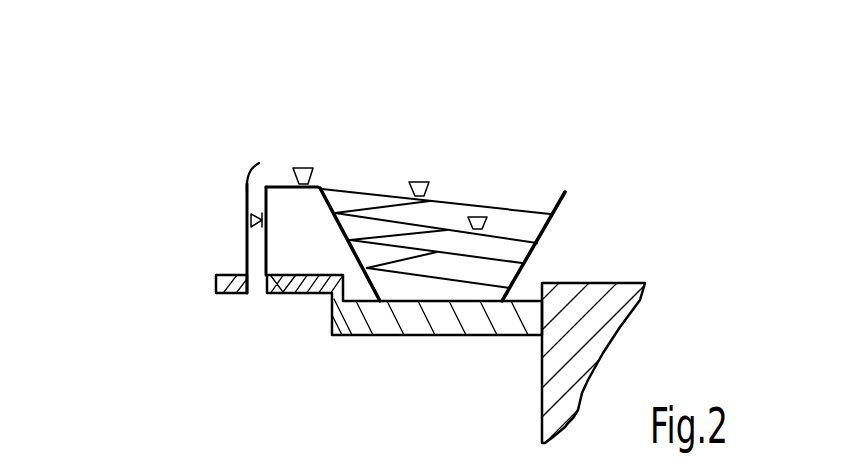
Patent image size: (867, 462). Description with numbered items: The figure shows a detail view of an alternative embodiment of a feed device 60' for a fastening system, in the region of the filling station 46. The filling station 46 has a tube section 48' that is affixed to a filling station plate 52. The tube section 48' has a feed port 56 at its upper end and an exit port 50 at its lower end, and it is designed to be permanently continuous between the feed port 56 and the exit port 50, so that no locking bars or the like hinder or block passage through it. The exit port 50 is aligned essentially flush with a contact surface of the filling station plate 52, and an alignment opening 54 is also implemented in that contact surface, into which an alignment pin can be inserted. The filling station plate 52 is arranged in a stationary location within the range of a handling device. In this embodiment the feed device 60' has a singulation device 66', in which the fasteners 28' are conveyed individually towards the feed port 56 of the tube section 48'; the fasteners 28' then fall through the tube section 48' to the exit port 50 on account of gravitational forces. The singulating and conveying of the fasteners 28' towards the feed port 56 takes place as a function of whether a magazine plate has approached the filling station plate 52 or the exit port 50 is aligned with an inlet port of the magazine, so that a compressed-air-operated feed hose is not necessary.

The filling station 46 is at (214, 152).
The feed port 56 is at (240, 178).
The tube section 48' is at (148, 238).
The filling station plate 52 is at (215, 285).
The exit port 50 is at (257, 288).
The alignment opening 54 is at (281, 295).
The fasteners 28' is at (408, 185).
The singulation device 66' is at (631, 246).
The feed device 60' is at (662, 69).